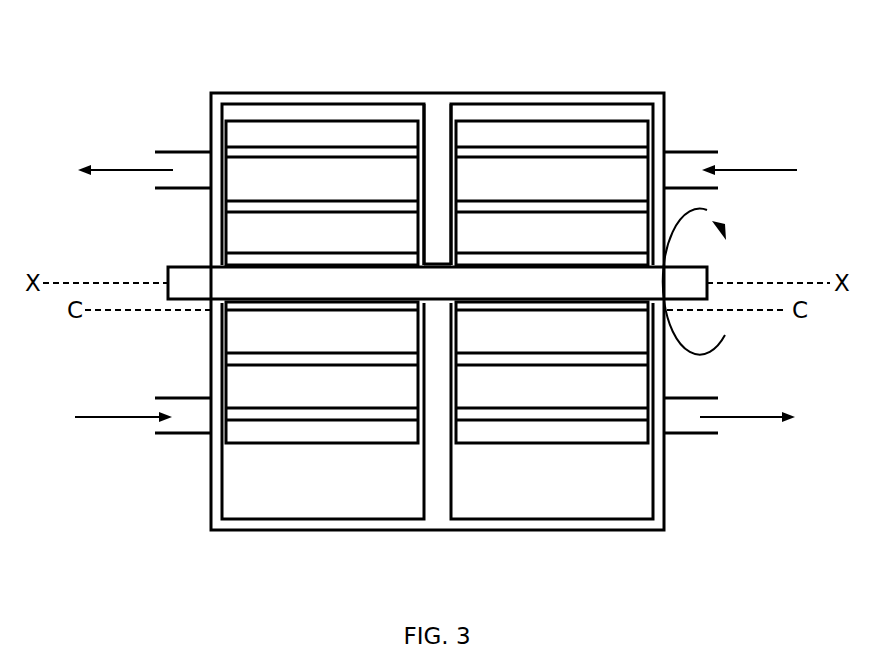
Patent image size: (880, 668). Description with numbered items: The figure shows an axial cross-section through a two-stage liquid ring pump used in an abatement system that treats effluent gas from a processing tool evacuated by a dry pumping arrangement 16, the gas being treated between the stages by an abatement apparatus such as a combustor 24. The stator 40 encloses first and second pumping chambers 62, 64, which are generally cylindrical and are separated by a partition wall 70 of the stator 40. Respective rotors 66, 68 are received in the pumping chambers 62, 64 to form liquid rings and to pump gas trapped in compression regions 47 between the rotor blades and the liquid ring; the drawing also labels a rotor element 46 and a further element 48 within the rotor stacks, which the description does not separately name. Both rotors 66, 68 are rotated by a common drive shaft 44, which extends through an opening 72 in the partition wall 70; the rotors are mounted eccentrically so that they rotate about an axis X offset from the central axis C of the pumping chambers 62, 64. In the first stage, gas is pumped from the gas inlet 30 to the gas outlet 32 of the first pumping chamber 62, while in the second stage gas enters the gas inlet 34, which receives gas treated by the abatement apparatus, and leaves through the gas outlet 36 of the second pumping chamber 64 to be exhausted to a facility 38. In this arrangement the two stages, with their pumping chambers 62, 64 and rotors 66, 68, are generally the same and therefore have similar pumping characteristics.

The dry pumping arrangement 16 is at (762, 168).
The combustor 24 is at (90, 420).
The gas inlet 30 is at (688, 150).
The gas outlet 32 is at (688, 435).
The gas inlet 34 is at (183, 437).
The gas outlet 36 is at (190, 152).
The facility 38 is at (112, 168).
The stator 40 is at (285, 100).
The drive shaft 44 is at (188, 277).
The heat exchanger stack 46 is at (322, 413).
The compression regions 47 is at (247, 191).
The spacer 48 is at (353, 258).
The first pumping chamber 62 is at (558, 115).
The second pumping chamber 64 is at (377, 115).
The rotor 66 is at (390, 446).
The rotor 68 is at (592, 447).
The partition wall 70 is at (437, 123).
The opening 72 is at (437, 262).